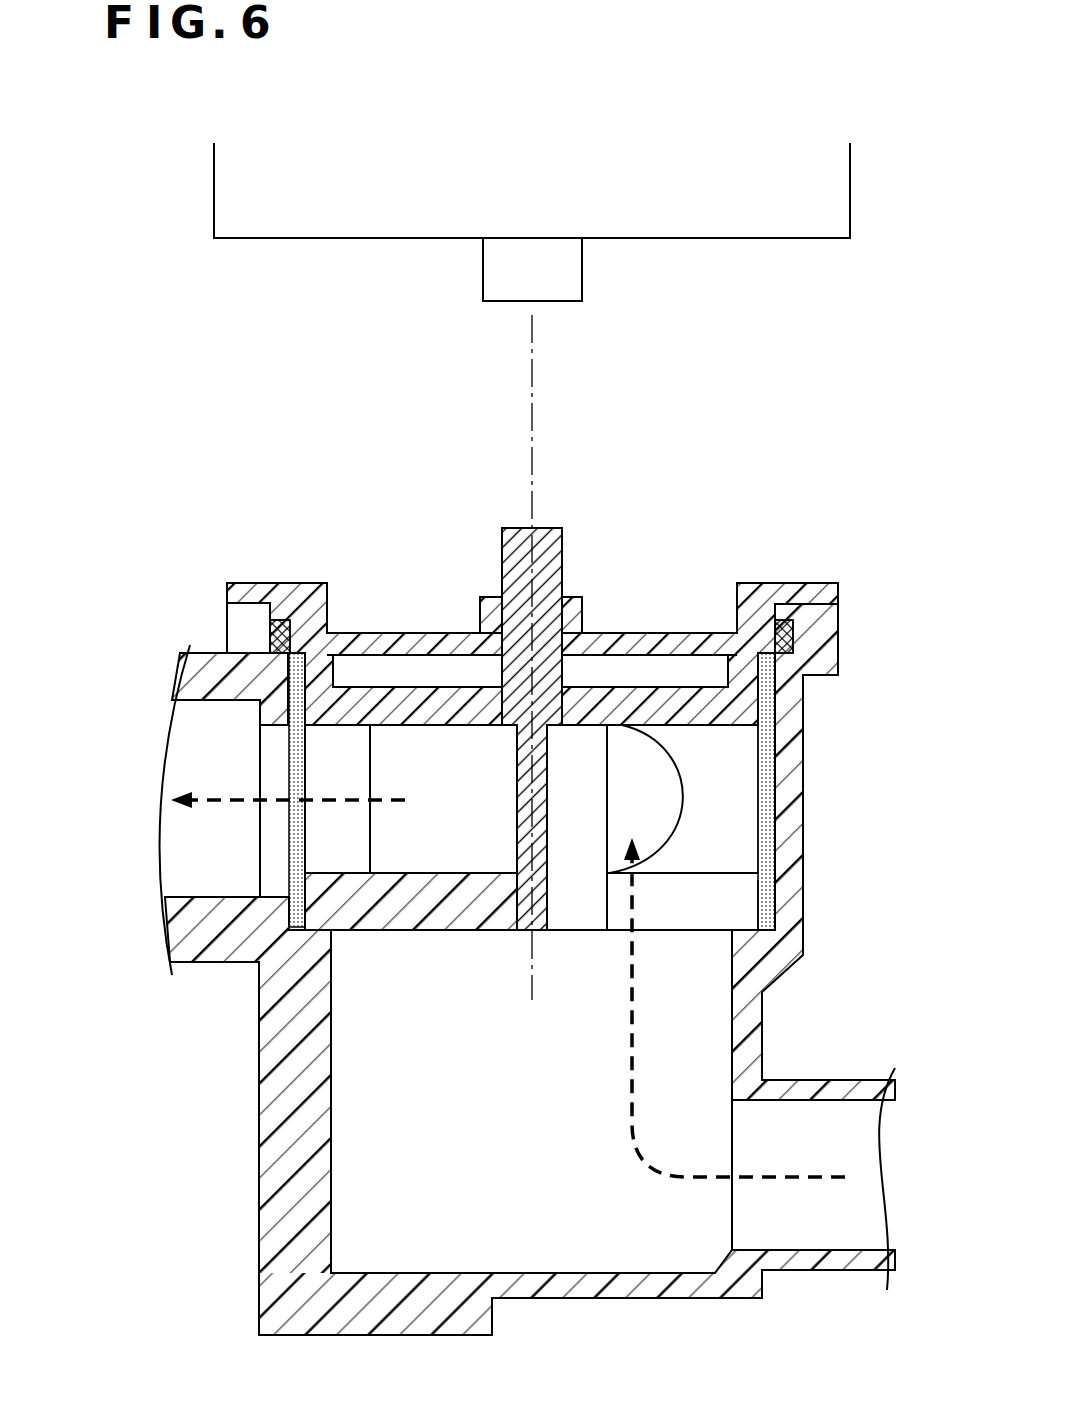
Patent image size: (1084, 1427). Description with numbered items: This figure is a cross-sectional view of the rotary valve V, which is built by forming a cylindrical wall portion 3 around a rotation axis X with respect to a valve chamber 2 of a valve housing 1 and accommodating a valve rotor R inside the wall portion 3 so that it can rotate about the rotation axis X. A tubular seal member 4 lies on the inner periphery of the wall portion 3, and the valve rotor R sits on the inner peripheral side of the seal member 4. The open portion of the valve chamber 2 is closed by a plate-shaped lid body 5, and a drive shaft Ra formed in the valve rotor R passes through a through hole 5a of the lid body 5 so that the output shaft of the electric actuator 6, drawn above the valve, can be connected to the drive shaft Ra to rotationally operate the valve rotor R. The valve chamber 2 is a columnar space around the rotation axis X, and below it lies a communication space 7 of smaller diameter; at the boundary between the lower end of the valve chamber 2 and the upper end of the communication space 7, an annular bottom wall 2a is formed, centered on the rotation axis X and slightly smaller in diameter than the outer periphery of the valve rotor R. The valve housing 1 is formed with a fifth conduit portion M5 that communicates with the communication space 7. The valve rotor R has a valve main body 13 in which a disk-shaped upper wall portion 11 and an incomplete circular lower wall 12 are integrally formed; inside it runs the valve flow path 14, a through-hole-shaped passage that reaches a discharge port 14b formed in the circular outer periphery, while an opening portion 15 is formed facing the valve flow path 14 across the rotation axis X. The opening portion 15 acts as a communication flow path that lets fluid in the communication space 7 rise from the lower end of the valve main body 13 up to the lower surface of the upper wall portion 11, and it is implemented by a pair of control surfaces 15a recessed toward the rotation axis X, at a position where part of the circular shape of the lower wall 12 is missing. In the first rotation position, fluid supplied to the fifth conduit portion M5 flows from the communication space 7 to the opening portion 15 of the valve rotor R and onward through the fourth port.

The valve housing 1 is at (274, 1013).
The valve chamber 2 is at (276, 828).
The annular bottom wall 2a is at (751, 913).
The wall portion 3 is at (795, 781).
The seal member 4 is at (745, 857).
The lid body 5 is at (288, 592).
The through hole 5a is at (556, 577).
The electric actuator 6 is at (228, 183).
The communication space 7 is at (537, 1126).
The upper wall portion 11 is at (381, 650).
The lower wall 12 is at (453, 931).
The valve main body 13 is at (273, 697).
The valve flow path 14 is at (466, 818).
The discharge port 14b is at (324, 775).
The opening portion 15 is at (716, 757).
The control surfaces 15a is at (590, 804).
The drive shaft Ra is at (512, 562).
The valve rotor R is at (780, 708).
The rotary valve V is at (847, 519).
The rotation axis X is at (530, 677).
The fifth conduit portion M5 is at (812, 1090).